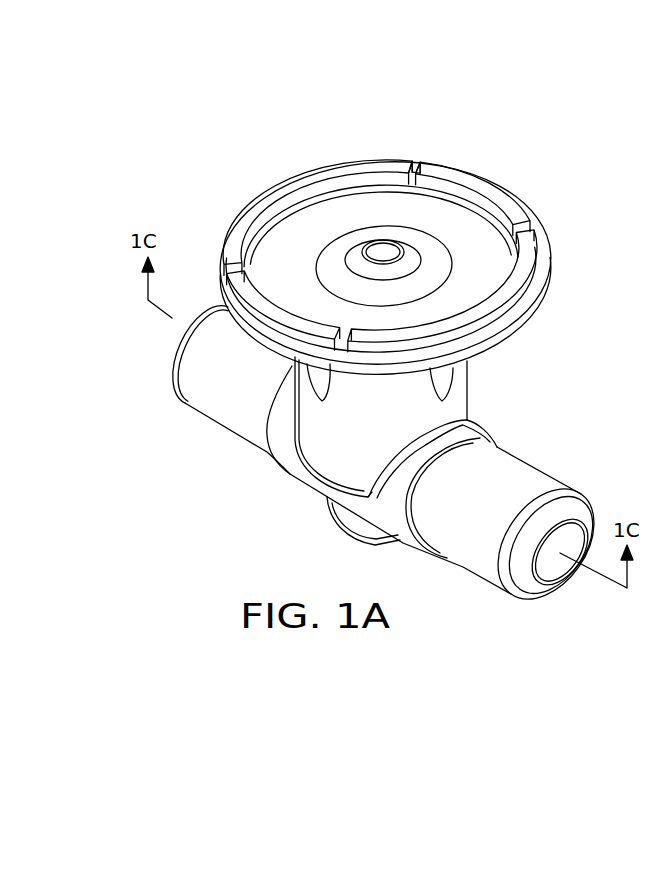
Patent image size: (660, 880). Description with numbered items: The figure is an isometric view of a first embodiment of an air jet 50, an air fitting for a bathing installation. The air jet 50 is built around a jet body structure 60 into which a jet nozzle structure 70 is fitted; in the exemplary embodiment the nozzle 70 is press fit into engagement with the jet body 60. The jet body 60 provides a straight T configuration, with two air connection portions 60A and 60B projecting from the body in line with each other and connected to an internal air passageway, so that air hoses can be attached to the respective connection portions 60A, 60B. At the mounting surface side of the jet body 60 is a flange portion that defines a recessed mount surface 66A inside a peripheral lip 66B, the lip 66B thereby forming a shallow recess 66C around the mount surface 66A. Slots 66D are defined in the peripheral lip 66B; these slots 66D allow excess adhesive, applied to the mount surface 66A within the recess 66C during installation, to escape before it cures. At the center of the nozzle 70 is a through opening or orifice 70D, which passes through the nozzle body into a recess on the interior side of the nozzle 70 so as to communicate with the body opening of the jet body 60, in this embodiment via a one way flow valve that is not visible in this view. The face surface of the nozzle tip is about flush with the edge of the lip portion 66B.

The air jet 50 is at (190, 128).
The jet nozzle structure 70 is at (335, 256).
The through opening or orifice 70D is at (383, 260).
The recessed mount surface 66A is at (473, 199).
The peripheral lip 66B is at (442, 291).
The shallow recess 66C is at (415, 167).
The slots 66D is at (283, 310).
The jet body structure 60 is at (481, 382).
The air connection portion 60A is at (170, 368).
The air connection portion 60B is at (585, 498).